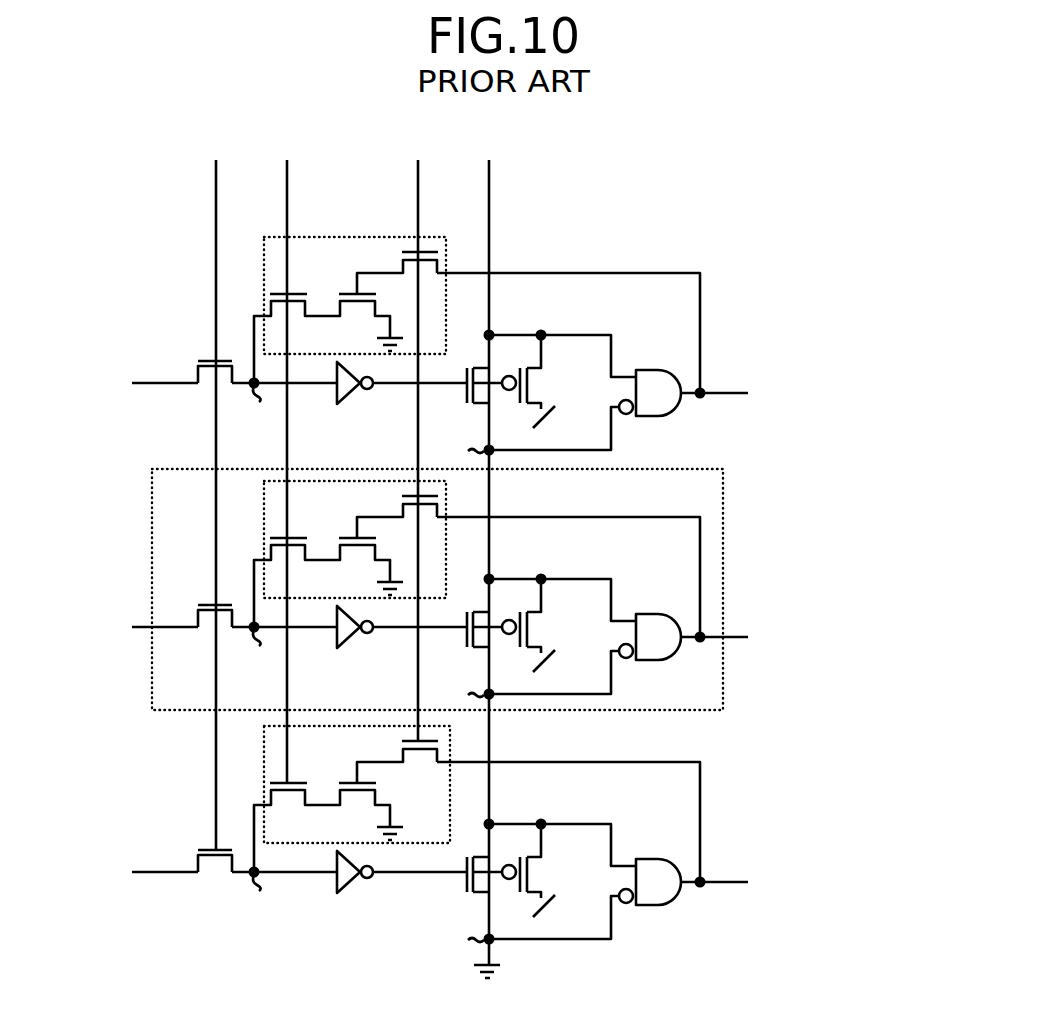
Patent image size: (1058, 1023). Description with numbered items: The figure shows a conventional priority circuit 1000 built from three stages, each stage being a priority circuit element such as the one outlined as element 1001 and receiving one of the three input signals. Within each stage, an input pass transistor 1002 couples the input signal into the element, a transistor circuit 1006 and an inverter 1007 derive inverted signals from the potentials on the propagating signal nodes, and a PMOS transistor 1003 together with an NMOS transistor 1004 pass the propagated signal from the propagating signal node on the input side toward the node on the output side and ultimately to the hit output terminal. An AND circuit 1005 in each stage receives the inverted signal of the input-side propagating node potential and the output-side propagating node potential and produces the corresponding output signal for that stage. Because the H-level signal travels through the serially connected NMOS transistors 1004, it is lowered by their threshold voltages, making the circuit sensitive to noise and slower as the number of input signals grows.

The priority circuit 1000 is at (803, 229).
The unit circuit 1001 is at (733, 547).
The pass transistor 1002 is at (206, 357).
The PMOS transistor 1003 is at (537, 372).
The NMOS transistor 1004 is at (464, 393).
The AND gate 1005 is at (660, 411).
The transistor circuit 1006 is at (319, 366).
The inverter 1007 is at (339, 397).